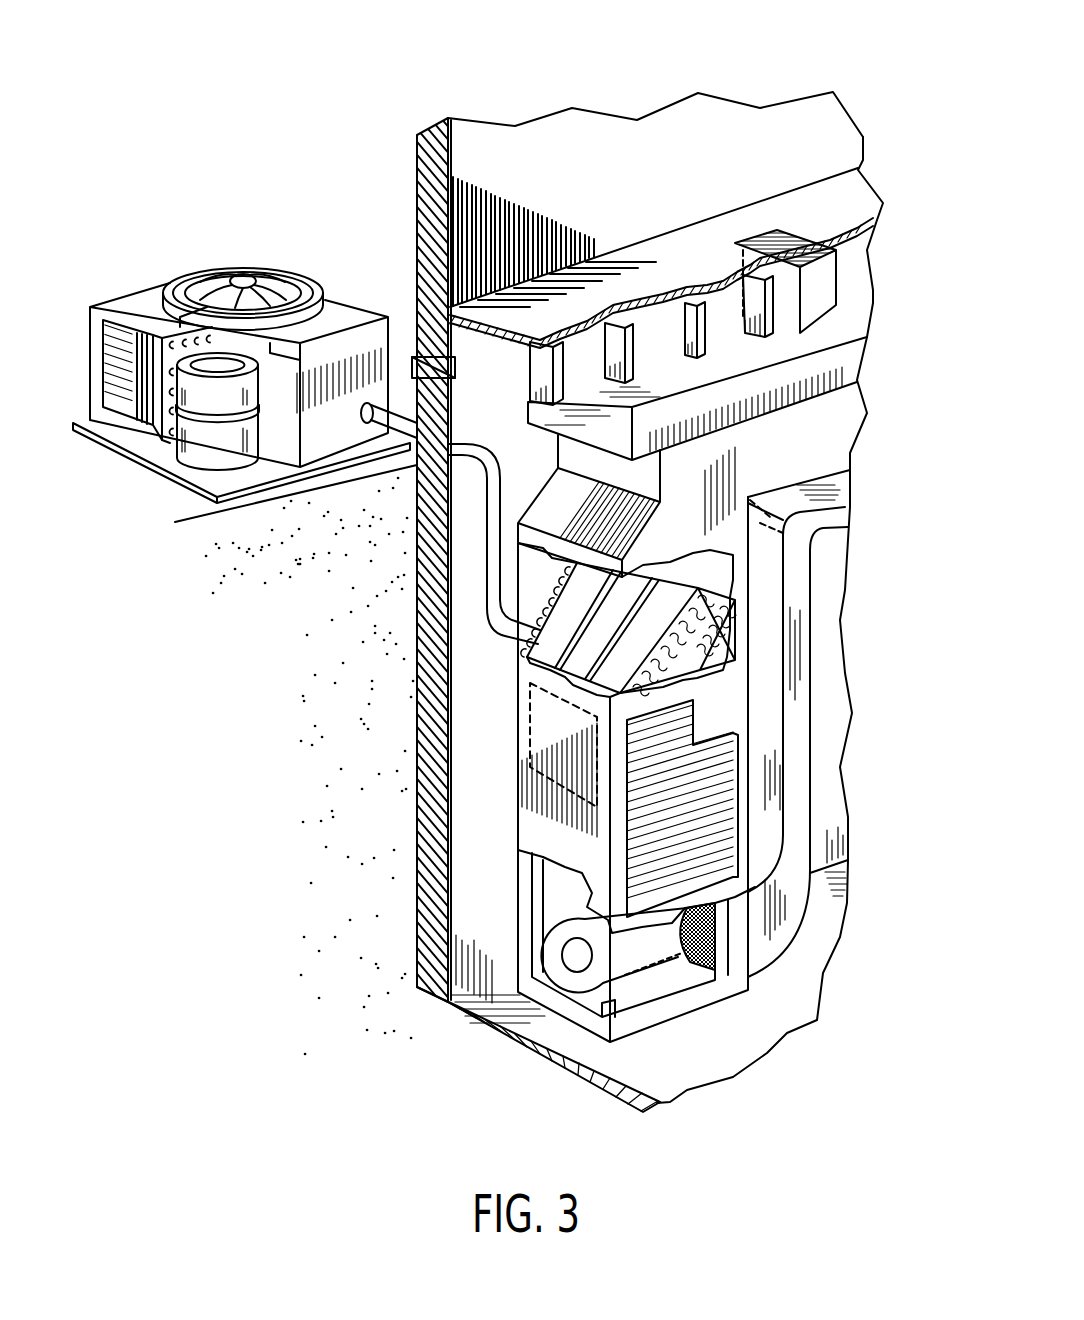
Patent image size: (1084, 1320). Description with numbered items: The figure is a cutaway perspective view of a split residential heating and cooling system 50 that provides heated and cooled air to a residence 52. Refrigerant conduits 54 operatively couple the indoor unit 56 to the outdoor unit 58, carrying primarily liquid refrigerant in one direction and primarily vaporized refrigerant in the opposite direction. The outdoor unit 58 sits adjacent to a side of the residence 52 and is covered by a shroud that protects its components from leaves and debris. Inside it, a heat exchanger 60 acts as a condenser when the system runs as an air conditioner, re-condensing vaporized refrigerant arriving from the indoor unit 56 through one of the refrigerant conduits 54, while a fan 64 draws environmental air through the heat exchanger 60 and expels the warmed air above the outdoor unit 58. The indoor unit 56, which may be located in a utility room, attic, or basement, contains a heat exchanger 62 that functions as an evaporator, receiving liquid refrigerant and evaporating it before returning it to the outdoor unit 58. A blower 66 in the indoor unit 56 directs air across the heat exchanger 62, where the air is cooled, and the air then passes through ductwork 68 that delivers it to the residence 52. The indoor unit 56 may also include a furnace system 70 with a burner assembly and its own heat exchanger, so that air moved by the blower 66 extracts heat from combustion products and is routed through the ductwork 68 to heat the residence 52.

The residential heating and cooling system 50 is at (244, 94).
The residence 52 is at (557, 140).
The refrigerant conduits 54 is at (485, 533).
The indoor unit 56 is at (523, 784).
The outdoor unit 58 is at (241, 338).
The heat exchanger 60 is at (171, 341).
The heat exchanger 62 is at (580, 657).
The fan 64 is at (261, 268).
The blower 66 is at (568, 980).
The ductwork 68 is at (793, 377).
The furnace system 70 is at (530, 735).